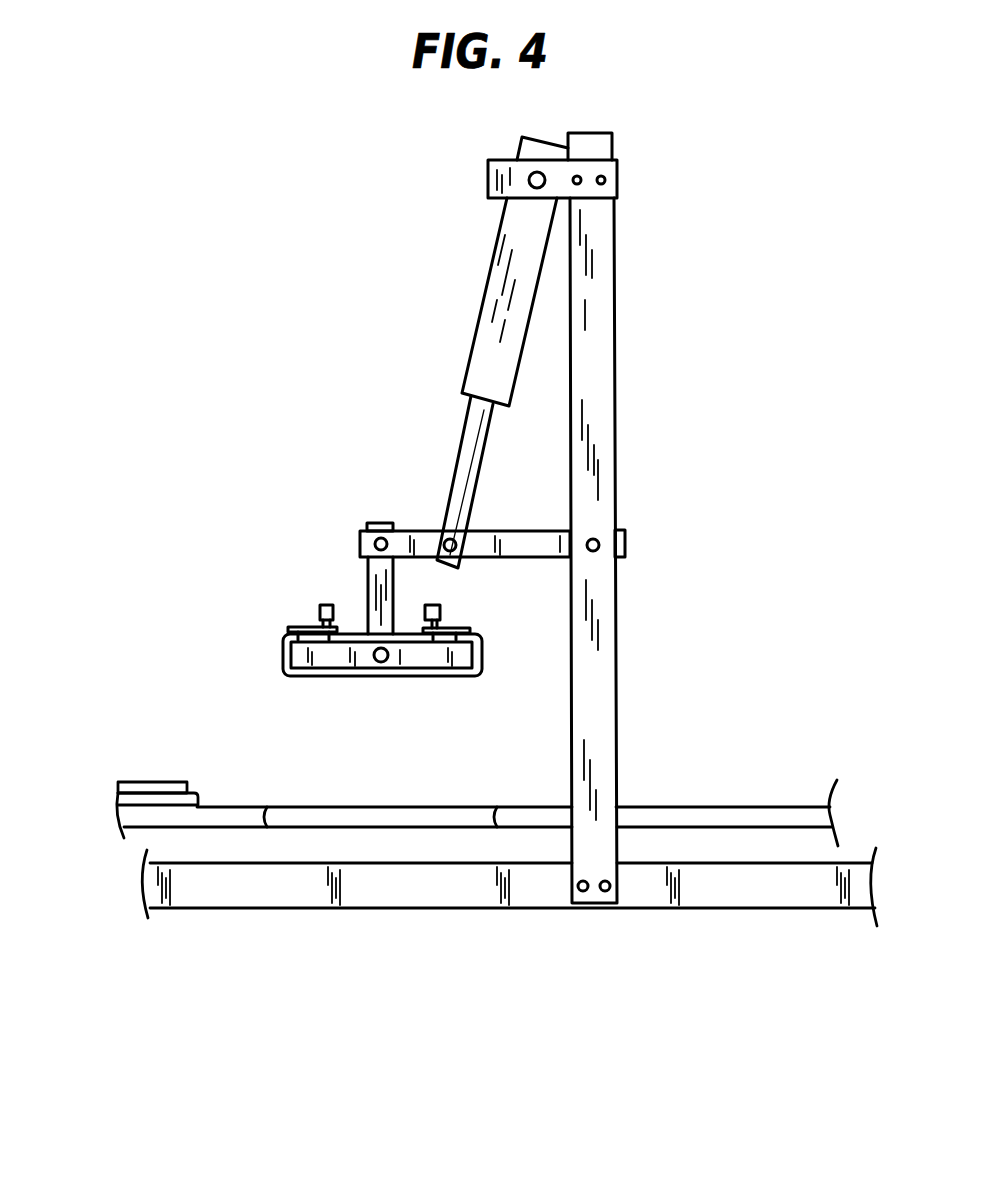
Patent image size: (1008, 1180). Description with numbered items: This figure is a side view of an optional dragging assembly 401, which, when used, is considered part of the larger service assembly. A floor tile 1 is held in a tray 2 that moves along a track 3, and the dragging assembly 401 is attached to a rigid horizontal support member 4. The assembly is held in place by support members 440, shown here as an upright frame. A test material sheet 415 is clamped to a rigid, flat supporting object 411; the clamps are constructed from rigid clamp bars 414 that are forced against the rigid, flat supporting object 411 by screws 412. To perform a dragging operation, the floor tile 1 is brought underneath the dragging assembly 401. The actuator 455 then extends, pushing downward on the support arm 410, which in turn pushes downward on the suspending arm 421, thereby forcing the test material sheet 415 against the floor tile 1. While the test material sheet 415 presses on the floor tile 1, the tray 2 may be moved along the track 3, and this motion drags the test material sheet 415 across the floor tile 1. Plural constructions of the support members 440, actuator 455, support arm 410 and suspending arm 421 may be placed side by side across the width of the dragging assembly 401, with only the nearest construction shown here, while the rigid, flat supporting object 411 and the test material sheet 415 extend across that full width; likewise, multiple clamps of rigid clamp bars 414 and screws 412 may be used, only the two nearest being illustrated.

The dragging assembly 401 is at (241, 279).
The support members 440 is at (617, 182).
The actuator 455 is at (494, 250).
The support arm 410 is at (420, 531).
The suspending arm 421 is at (380, 523).
The rigid, flat supporting object 411 is at (353, 634).
The screws 412 is at (323, 605).
The rigid clamp bars 414 is at (298, 628).
The test material sheet 415 is at (283, 657).
The floor tile 1 is at (139, 782).
The tray 2 is at (198, 793).
The track 3 is at (280, 805).
The rigid horizontal support member 4 is at (164, 912).